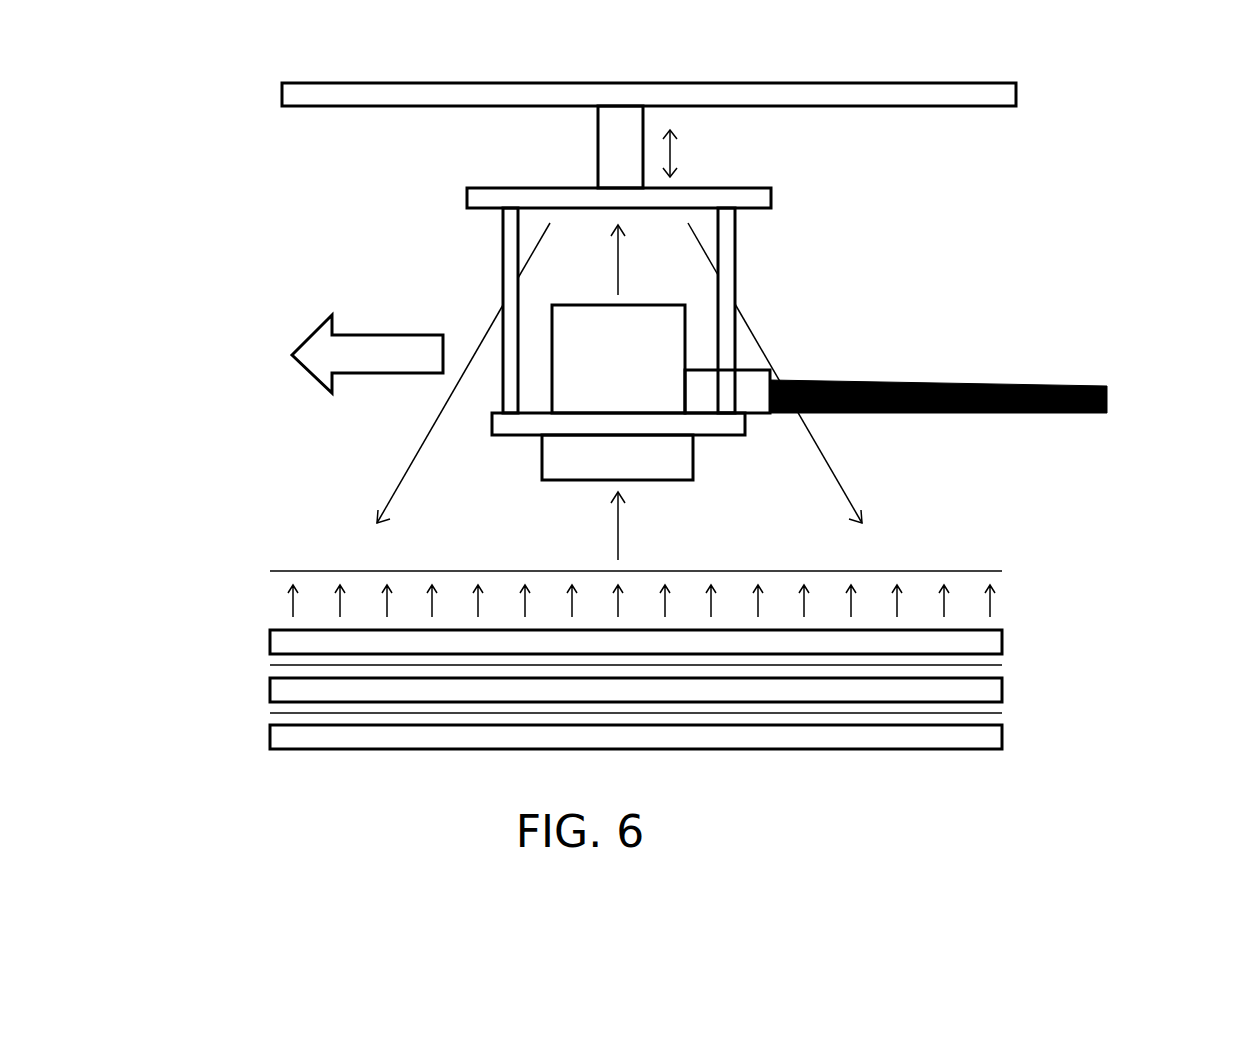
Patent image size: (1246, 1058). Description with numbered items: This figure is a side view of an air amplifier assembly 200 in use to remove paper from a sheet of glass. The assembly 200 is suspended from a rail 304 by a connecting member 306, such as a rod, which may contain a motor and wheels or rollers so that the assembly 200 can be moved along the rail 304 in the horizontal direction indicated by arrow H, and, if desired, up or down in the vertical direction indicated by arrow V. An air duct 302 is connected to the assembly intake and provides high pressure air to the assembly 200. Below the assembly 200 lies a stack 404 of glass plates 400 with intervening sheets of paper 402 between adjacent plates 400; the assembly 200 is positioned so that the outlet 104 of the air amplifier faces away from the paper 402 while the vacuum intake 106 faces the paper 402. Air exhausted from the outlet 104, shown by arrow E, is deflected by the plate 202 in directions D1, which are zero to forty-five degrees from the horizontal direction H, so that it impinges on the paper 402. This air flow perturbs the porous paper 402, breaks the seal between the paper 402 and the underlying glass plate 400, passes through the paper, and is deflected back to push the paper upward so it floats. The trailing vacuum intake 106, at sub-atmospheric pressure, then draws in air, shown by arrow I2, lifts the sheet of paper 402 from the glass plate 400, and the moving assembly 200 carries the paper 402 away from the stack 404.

The outlet 104 is at (653, 307).
The vacuum intake 106 is at (655, 480).
The assembly 200 is at (313, 260).
The plate 202 is at (750, 205).
The air duct 302 is at (980, 378).
The rail 304 is at (665, 82).
The connecting member 306 is at (598, 147).
The glass plate 400 is at (270, 640).
The sheet of paper 402 is at (992, 573).
The stack 404 is at (699, 666).
The horizontal direction H is at (351, 362).
The vertical direction V is at (686, 153).
The air exhaust stream E is at (604, 260).
The deflected air direction D1 is at (601, 373).
The incident light I2 is at (634, 526).